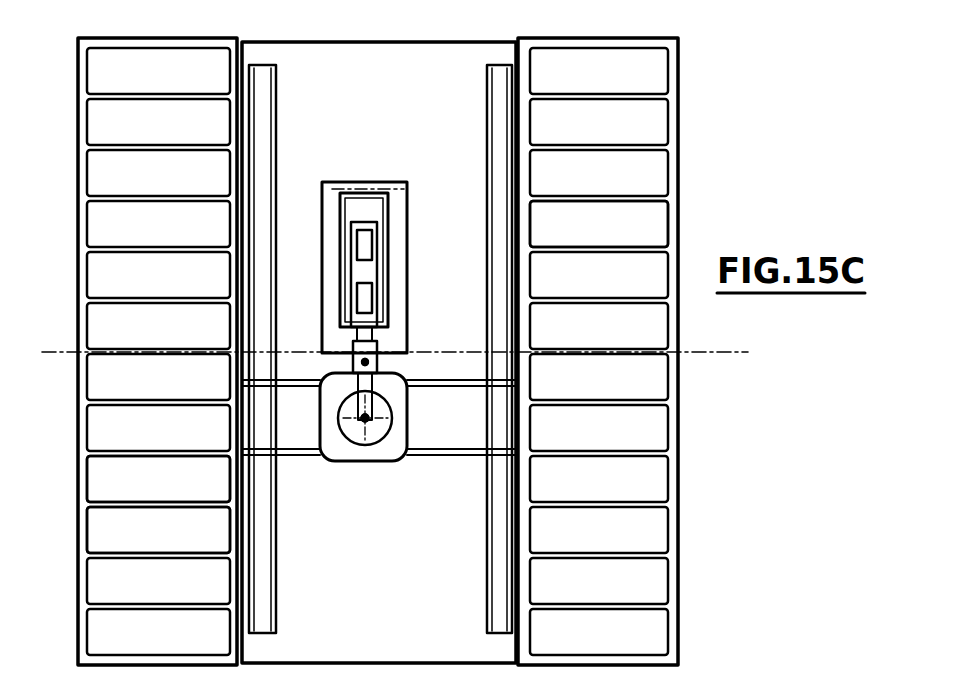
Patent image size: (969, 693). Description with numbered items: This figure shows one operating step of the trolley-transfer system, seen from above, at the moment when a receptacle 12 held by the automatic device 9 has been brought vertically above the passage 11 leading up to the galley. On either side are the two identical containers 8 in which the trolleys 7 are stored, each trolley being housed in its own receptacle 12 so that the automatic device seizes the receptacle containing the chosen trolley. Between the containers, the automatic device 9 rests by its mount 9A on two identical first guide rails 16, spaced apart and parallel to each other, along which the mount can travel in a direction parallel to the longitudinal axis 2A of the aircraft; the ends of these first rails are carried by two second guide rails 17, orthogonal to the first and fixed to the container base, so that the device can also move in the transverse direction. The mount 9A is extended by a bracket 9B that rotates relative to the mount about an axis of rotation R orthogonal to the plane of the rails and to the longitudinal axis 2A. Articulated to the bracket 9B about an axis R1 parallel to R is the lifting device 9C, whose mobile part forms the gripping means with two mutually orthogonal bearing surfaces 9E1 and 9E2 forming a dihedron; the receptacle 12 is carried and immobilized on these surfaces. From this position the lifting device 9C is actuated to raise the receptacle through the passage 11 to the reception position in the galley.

The longitudinal axis 2A is at (723, 352).
The trolley 7 is at (118, 488).
The container 8 is at (78, 228).
The automatic device 9 is at (378, 446).
The mount 9A is at (347, 451).
The bracket 9B is at (380, 397).
The lifting device 9C is at (380, 366).
The bearing surface 9E1 is at (370, 268).
The bearing surface 9E2 is at (368, 318).
The passage 11 is at (398, 183).
The receptacle 12 is at (78, 468).
The first guide rail 16 is at (306, 456).
The second guide rail 17 is at (266, 601).
The axis of rotation R is at (360, 422).
The axis R1 is at (357, 362).